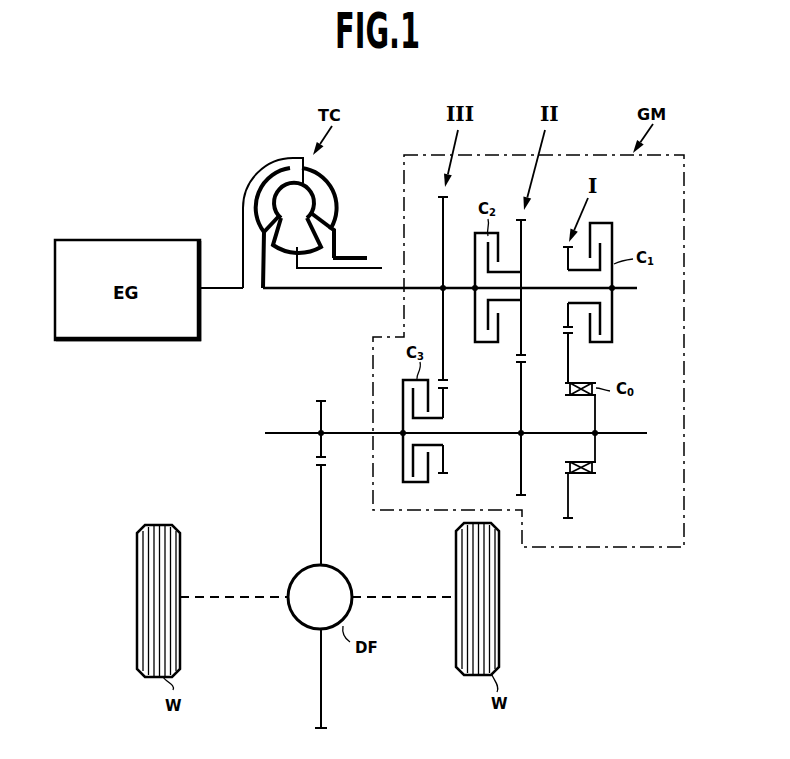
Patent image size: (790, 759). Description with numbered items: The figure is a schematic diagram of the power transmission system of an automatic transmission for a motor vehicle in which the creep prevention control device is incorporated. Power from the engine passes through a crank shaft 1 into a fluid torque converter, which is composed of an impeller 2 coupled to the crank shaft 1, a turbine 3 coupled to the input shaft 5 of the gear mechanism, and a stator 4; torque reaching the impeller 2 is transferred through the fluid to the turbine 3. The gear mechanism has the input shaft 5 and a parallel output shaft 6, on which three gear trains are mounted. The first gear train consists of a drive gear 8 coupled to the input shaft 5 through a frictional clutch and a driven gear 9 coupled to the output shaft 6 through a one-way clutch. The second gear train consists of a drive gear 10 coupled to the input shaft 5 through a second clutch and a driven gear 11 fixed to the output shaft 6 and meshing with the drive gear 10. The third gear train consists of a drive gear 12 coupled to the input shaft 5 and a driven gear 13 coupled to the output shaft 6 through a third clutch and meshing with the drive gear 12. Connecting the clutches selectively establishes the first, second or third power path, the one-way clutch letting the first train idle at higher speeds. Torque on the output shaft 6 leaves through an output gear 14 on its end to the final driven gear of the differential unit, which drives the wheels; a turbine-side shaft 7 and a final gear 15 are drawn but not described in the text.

The crank shaft 1 is at (222, 287).
The impeller 2 is at (328, 193).
The turbine 3 is at (265, 197).
The stator 4 is at (288, 248).
The input shaft 5 is at (325, 290).
The output shaft 6 is at (349, 432).
The turbine output shaft 7 is at (355, 257).
The drive gear 8 is at (568, 264).
The driven gear 9 is at (568, 358).
The drive gear 10 is at (522, 235).
The driven gear 11 is at (523, 396).
The drive gear 12 is at (442, 242).
The driven gear 13 is at (444, 397).
The output gear 14 is at (320, 422).
The final gear 15 is at (320, 503).